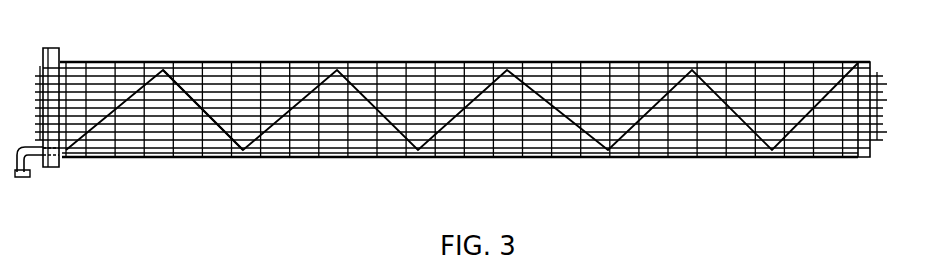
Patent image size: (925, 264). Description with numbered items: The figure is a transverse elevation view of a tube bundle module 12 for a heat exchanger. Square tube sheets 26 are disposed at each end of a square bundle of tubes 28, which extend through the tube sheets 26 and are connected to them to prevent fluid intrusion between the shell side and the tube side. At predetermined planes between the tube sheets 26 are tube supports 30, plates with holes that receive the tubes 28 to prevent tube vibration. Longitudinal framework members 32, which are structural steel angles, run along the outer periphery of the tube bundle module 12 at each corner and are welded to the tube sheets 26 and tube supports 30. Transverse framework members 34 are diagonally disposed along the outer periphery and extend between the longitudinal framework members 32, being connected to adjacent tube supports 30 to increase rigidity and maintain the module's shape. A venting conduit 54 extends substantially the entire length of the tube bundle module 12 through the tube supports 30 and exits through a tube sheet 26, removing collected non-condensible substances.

The tube bundle module 12 is at (357, 30).
The tube sheet 26 is at (60, 55).
The tubes 28 is at (597, 97).
The tube support 30 is at (293, 143).
The longitudinal framework member 32 is at (494, 63).
The transverse framework member 34 is at (190, 95).
The conduit 54 is at (27, 173).